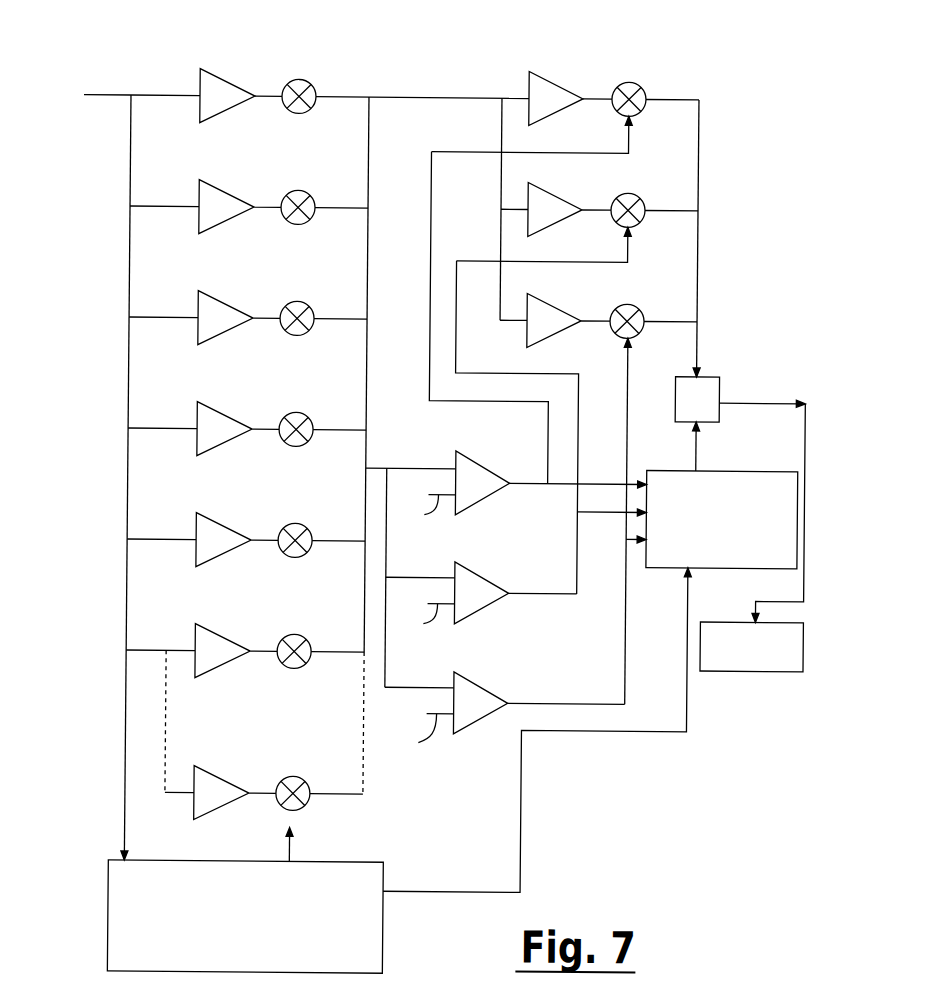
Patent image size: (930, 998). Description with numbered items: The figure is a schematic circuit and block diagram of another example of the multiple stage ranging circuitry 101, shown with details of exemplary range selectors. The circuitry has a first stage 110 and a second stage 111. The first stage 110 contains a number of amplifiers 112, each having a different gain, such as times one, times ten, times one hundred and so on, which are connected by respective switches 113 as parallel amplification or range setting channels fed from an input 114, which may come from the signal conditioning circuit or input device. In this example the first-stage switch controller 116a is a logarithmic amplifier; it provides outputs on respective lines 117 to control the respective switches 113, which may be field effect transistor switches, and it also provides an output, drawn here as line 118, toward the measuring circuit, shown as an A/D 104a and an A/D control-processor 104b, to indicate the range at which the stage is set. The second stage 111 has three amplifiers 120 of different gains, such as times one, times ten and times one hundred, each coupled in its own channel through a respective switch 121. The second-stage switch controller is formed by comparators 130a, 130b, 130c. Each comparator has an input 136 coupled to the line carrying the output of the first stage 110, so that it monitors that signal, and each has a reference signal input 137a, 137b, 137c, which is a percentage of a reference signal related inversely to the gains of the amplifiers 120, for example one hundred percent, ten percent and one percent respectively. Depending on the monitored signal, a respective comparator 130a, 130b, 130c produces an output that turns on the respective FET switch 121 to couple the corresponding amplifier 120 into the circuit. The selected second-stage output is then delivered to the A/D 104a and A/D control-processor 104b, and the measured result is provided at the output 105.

The multiple stage ranging circuitry 101 is at (145, 26).
The first stage 110 is at (327, 412).
The second stage 111 is at (565, 358).
The amplifiers 112 is at (235, 52).
The switches 113 is at (307, 47).
The input 114 is at (131, 130).
The amplifiers 120 is at (548, 52).
The switches 121 is at (623, 49).
The input 136 is at (405, 465).
The comparator 130a is at (475, 452).
The comparator 130b is at (477, 564).
The comparator 130c is at (474, 669).
The reference signal input 137a is at (426, 522).
The reference signal input 137b is at (430, 627).
The reference signal input 137c is at (425, 744).
The A/D 104a is at (749, 372).
The A/D control-processor 104b is at (780, 465).
The output 105 is at (780, 666).
The switch controller 116a is at (349, 860).
The lines 117 is at (294, 847).
The logarithmic amplifier output line 118 is at (445, 889).